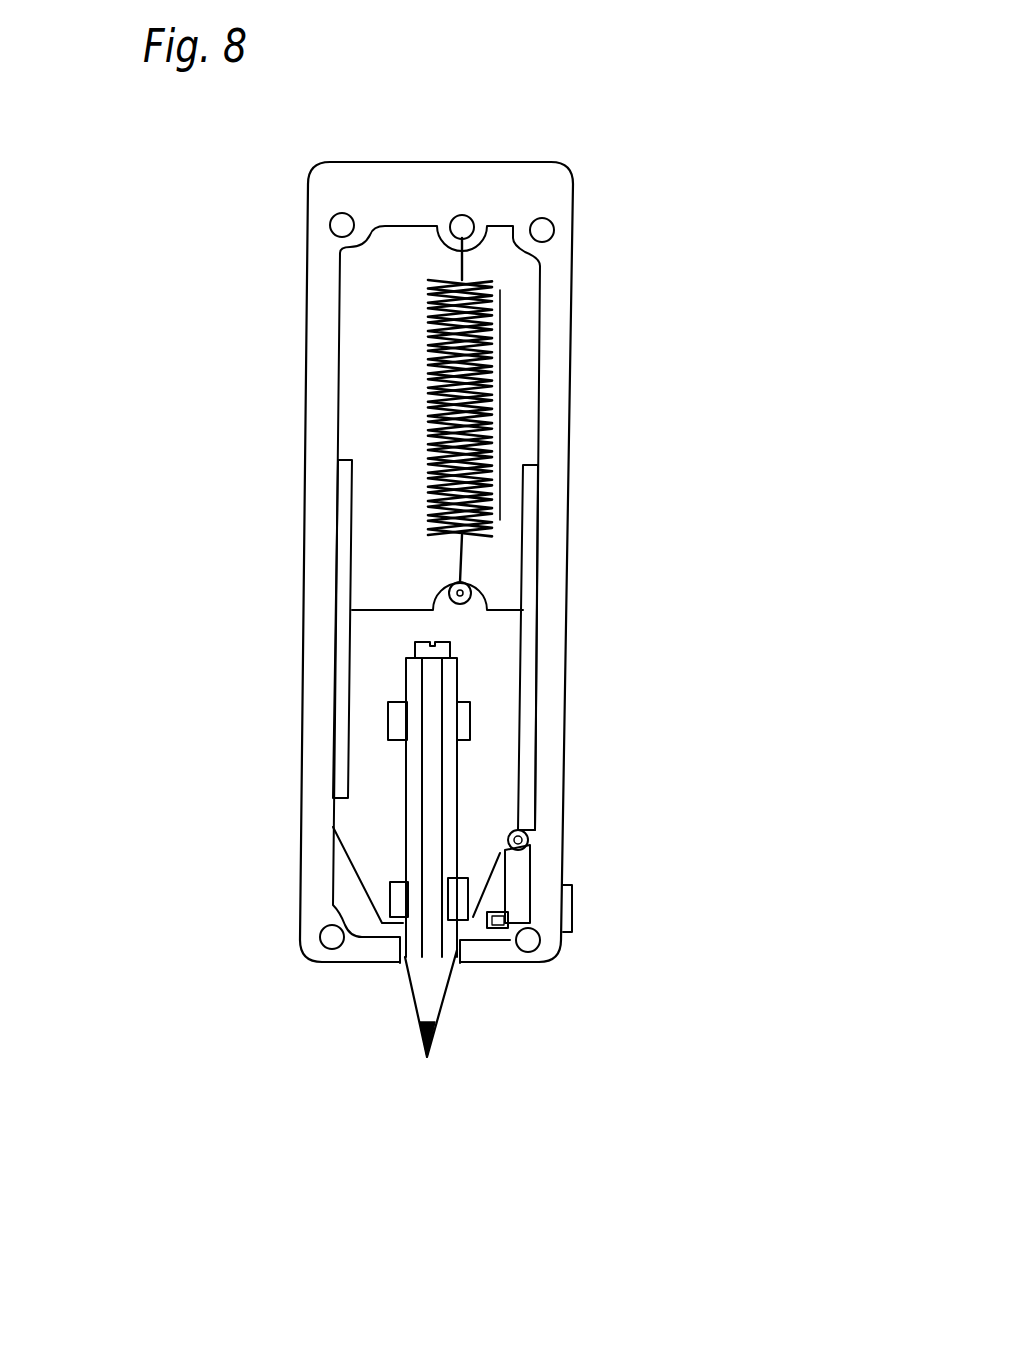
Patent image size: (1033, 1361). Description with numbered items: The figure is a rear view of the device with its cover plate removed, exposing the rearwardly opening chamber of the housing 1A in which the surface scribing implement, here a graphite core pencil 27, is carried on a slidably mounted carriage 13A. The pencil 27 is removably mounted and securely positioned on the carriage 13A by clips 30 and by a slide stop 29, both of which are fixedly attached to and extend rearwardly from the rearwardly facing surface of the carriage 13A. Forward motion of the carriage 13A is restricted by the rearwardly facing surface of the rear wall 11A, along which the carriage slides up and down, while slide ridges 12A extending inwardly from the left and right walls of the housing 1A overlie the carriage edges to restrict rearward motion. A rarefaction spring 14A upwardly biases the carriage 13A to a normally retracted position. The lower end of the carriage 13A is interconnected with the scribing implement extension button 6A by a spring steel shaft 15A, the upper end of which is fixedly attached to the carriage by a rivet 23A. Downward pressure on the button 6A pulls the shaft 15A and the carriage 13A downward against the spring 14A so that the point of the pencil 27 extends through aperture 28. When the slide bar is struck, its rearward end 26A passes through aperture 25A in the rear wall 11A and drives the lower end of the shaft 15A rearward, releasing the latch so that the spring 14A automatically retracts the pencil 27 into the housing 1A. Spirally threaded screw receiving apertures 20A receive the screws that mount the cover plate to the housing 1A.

The housing 1A is at (487, 183).
The spirally threaded screw receiving apertures 20A is at (336, 220).
The rarefaction spring 14A is at (430, 332).
The rear wall 11A is at (508, 337).
The slide ridges 12A is at (533, 495).
The carriage 13A is at (487, 652).
The slide stop 29 is at (432, 640).
The clips 30 is at (400, 714).
The spring steel shaft 15A is at (513, 873).
The rivet 23A is at (527, 833).
The scribing implement extension button 6A is at (570, 917).
The aperture 28 is at (398, 960).
The aperture 25A is at (474, 942).
The rearward end 26A is at (505, 928).
The graphite core pencil 27 is at (431, 1007).